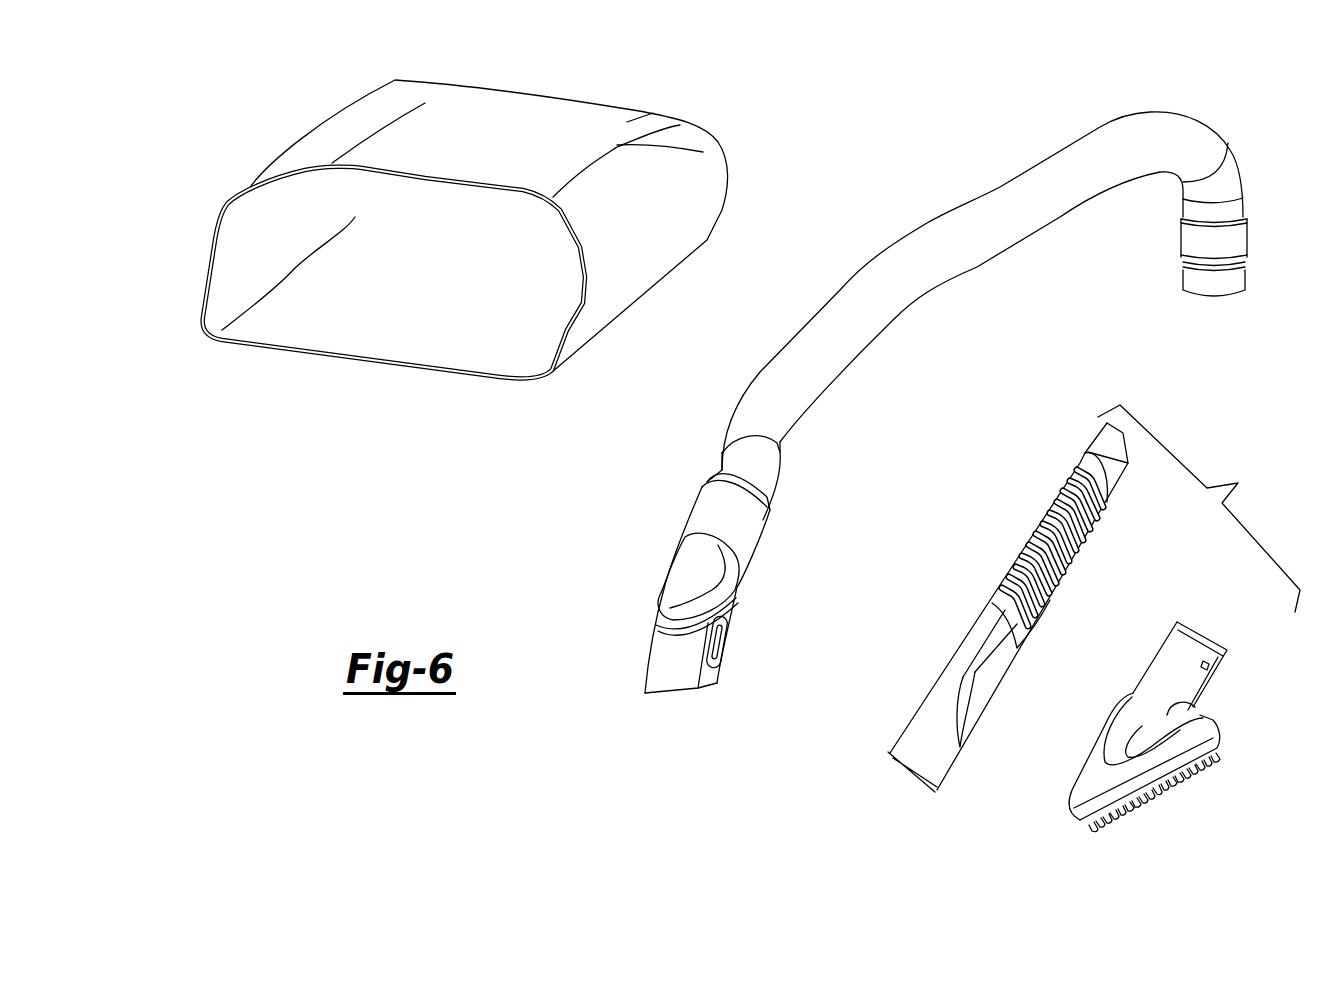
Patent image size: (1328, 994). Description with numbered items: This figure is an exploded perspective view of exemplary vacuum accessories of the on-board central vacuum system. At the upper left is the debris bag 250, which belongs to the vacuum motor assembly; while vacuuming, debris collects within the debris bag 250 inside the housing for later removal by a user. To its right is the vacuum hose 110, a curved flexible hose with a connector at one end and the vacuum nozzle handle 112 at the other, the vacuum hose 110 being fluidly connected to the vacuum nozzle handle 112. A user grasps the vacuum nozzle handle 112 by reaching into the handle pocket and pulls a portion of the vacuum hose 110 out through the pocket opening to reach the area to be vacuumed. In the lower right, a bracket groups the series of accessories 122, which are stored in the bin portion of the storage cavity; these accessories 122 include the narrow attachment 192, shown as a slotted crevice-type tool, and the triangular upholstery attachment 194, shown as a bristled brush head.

The debris bag 250 is at (517, 142).
The vacuum hose 110 is at (955, 225).
The vacuum nozzle handle 112 is at (683, 567).
The accessories 122 is at (1199, 508).
The narrow attachment 192 is at (928, 733).
The triangular upholstery attachment 194 is at (1190, 677).